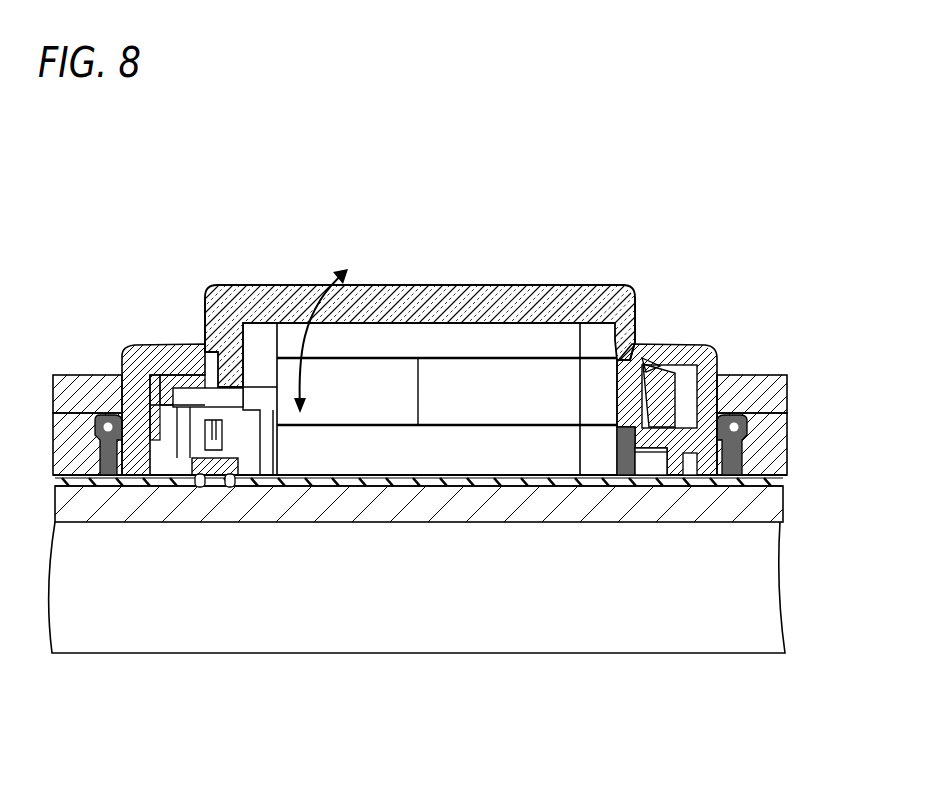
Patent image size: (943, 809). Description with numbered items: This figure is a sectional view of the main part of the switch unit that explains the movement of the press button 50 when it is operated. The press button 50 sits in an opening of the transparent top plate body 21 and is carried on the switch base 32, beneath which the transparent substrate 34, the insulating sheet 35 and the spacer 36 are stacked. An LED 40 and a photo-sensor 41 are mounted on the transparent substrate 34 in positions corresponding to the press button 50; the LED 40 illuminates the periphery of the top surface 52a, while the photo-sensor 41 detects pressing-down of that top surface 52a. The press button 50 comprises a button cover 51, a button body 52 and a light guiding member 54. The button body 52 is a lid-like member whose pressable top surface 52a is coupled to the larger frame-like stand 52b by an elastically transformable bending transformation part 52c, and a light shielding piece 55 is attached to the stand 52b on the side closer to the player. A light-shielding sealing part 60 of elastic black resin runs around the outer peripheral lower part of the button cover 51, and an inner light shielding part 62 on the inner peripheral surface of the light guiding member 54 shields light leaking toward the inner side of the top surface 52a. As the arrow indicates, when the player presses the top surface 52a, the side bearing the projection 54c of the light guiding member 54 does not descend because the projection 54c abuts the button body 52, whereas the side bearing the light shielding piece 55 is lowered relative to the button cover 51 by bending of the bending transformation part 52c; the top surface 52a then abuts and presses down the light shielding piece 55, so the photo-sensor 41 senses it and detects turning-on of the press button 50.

The top plate body 21 is at (773, 393).
The switch base 32 is at (780, 448).
The transparent substrate 34 is at (780, 476).
The insulating sheet 35 is at (780, 486).
The spacer 36 is at (777, 503).
The LED 40 is at (657, 476).
The photo-sensor 41 is at (218, 488).
The press button 50 is at (646, 270).
The button cover 51 is at (128, 368).
The button body 52 is at (556, 285).
The top surface 52a is at (420, 293).
The stand 52b is at (130, 352).
The bending transformation part 52c is at (192, 362).
The light guiding member 54 is at (167, 487).
The projection 54c is at (678, 368).
The light shielding piece 55 is at (217, 407).
The light-shielding sealing part 60 is at (750, 430).
The inner light shielding part 62 is at (628, 487).